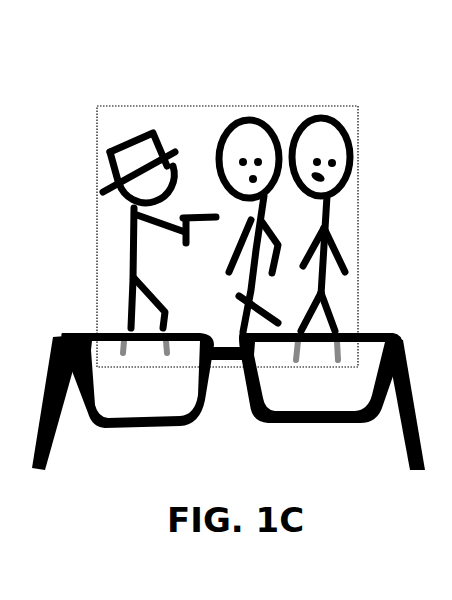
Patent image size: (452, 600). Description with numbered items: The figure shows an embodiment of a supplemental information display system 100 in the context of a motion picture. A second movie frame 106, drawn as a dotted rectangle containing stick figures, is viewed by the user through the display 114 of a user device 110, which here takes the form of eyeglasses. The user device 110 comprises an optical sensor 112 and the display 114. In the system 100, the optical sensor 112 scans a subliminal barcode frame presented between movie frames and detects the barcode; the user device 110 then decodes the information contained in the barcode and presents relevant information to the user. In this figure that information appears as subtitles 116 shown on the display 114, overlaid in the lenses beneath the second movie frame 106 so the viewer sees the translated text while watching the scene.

The supplemental information display system 100 is at (136, 75).
The second movie frame 106 is at (343, 104).
The user device 110 is at (365, 327).
The optical sensor 112 is at (70, 332).
The display 114 is at (158, 413).
The subtitles 116 is at (137, 413).